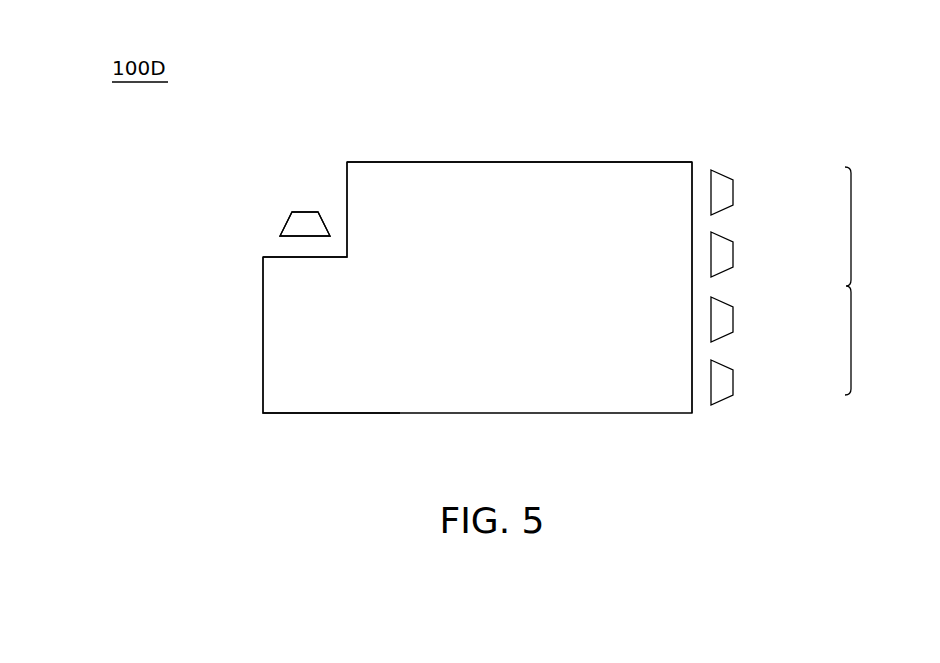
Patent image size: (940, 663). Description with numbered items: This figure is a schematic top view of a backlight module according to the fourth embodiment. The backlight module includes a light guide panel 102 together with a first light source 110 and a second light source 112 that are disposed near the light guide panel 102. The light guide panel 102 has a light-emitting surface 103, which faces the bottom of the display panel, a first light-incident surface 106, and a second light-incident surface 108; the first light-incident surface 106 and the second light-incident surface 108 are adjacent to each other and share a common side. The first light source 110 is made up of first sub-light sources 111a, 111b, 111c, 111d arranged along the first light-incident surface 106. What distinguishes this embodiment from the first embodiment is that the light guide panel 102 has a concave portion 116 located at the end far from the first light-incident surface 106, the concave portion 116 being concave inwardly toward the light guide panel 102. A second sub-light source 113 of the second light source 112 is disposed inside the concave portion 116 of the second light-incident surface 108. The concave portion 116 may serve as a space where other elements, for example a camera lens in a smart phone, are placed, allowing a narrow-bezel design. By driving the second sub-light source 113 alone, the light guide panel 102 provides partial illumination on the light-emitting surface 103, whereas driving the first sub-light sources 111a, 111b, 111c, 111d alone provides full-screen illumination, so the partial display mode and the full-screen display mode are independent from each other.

The light guide panel 102 is at (633, 160).
The light-emitting surface 103 is at (280, 402).
The first light-incident surface 106 is at (704, 162).
The second light-incident surface 108 is at (403, 152).
The first light source 110 is at (871, 281).
The first sub-light source 111a is at (733, 192).
The first sub-light source 111b is at (733, 254).
The first sub-light source 111c is at (733, 319).
The first sub-light source 111d is at (733, 382).
The second light source 112 is at (328, 198).
The second sub-light source 113 is at (285, 223).
The concave portion 116 is at (271, 166).